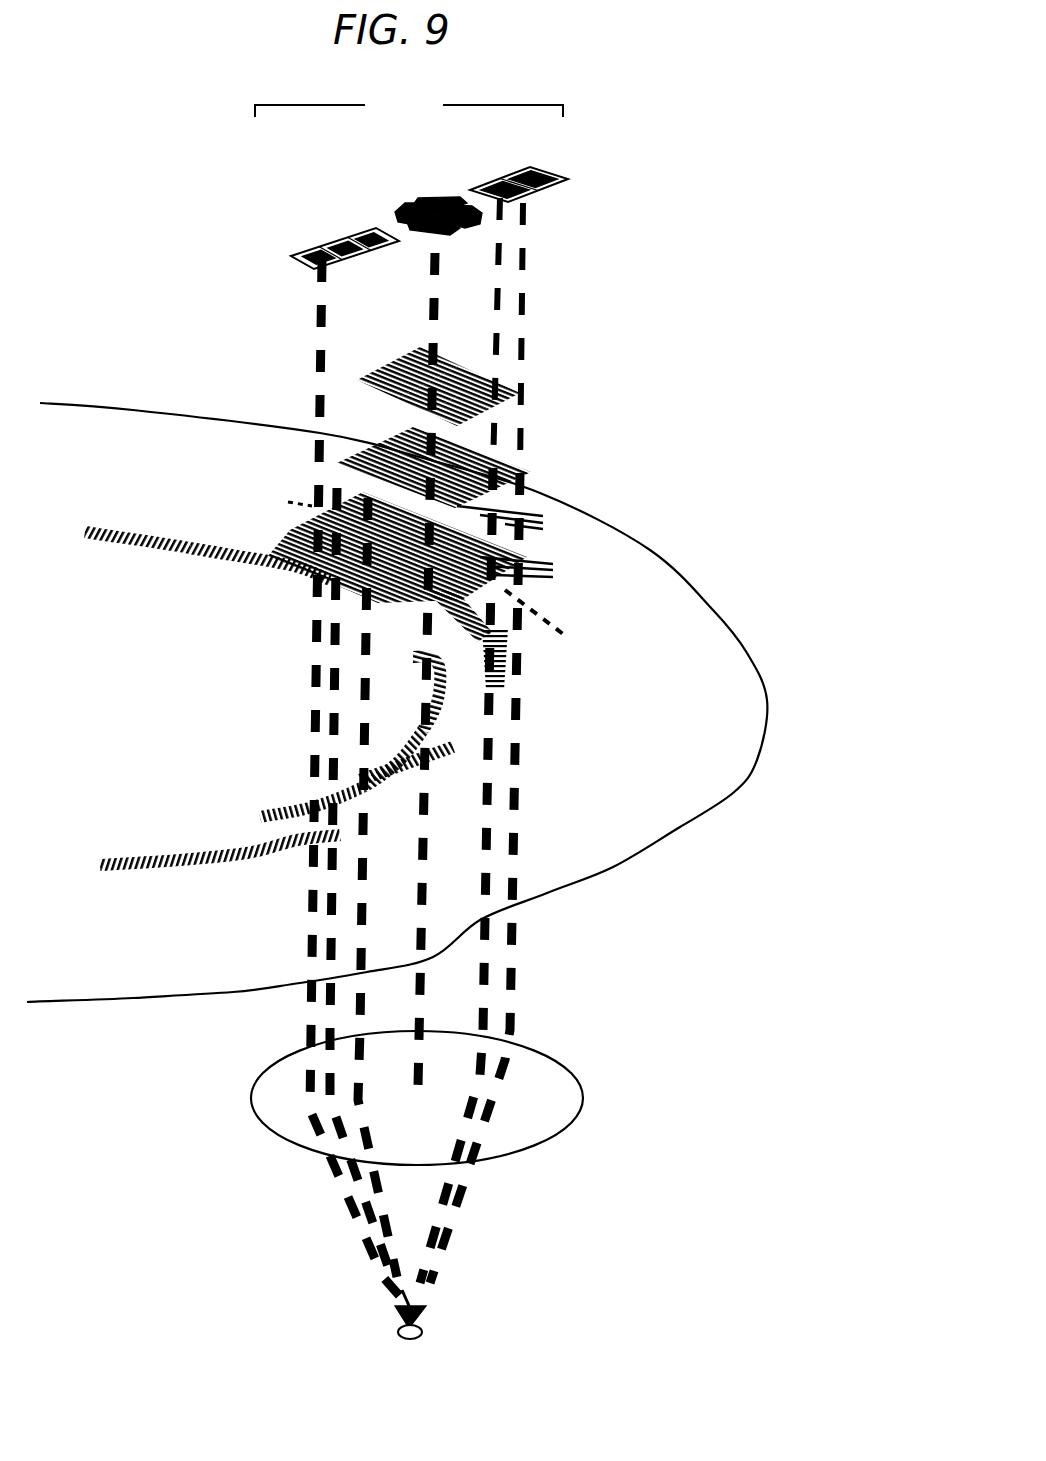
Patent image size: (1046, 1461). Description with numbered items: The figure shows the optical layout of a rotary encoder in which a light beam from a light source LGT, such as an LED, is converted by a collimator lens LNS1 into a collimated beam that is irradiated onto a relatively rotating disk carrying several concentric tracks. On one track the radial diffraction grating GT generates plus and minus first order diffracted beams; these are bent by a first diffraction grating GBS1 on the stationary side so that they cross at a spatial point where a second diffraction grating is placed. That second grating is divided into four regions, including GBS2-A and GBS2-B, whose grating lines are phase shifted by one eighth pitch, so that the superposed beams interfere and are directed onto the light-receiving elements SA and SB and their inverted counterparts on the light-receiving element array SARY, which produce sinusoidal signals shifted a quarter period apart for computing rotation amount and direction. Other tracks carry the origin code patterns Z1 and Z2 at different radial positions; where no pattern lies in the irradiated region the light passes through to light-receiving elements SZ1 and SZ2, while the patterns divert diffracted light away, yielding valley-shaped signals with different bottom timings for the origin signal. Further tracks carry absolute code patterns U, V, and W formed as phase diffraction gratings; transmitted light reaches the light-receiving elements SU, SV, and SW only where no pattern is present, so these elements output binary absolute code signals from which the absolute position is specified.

The light-receiving element array SARY is at (409, 105).
The light-receiving element SU is at (310, 261).
The light-receiving element SV is at (330, 248).
The light-receiving element SW is at (363, 237).
The light-receiving element SA is at (437, 204).
The light-receiving element SB is at (405, 210).
The light-receiving element SZ1 is at (498, 187).
The light-receiving element SZ2 is at (522, 180).
The region of second diffraction grating GBS2-A is at (487, 353).
The region of second diffraction grating GBS2-B is at (365, 382).
The first diffraction grating GBS1 is at (520, 470).
The origin code pattern Z1 is at (437, 513).
The origin code pattern Z2 is at (528, 506).
The radial diffraction grating GT is at (355, 515).
The absolute code pattern V is at (187, 537).
The absolute code pattern W is at (300, 547).
The absolute code pattern U is at (373, 770).
The collimator lens LNS1 is at (560, 1100).
The light source LGT is at (437, 1316).